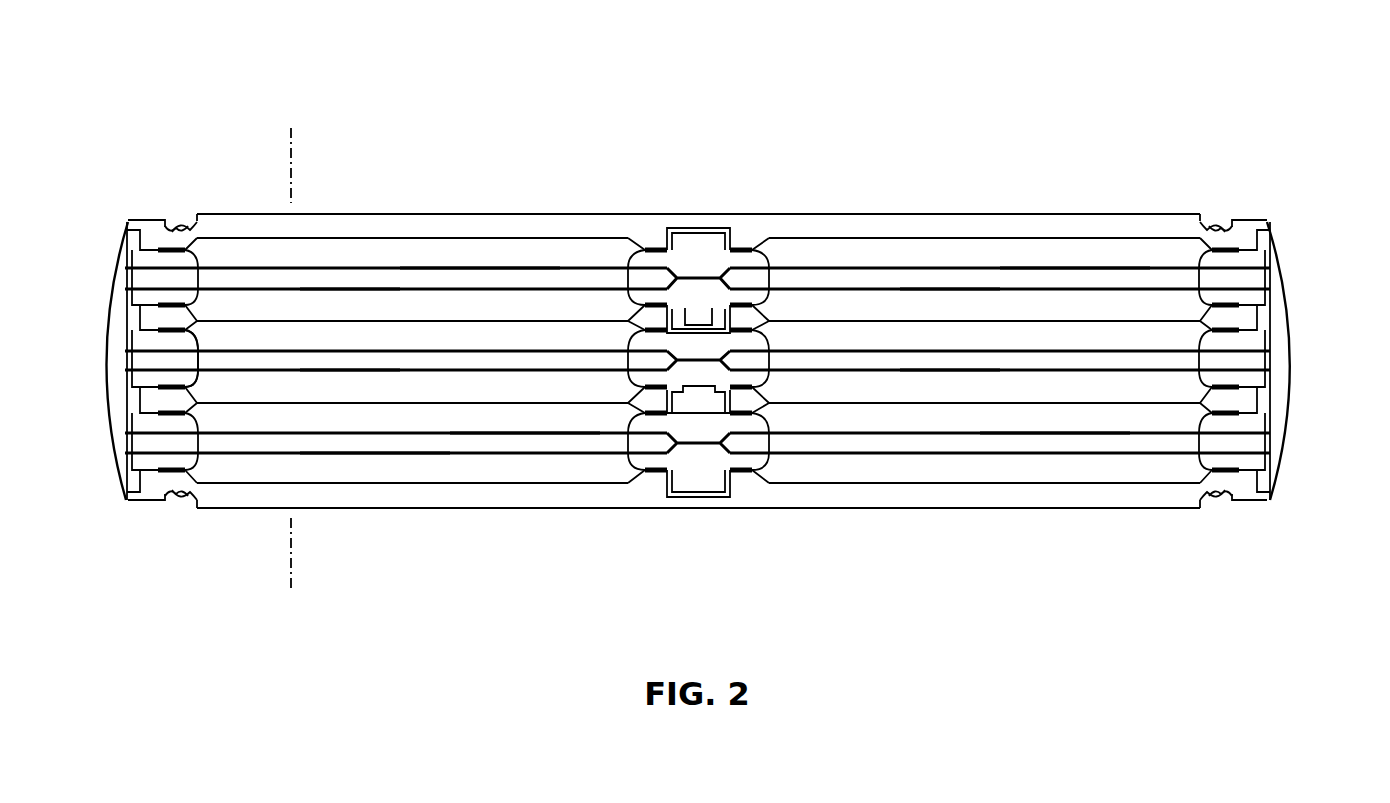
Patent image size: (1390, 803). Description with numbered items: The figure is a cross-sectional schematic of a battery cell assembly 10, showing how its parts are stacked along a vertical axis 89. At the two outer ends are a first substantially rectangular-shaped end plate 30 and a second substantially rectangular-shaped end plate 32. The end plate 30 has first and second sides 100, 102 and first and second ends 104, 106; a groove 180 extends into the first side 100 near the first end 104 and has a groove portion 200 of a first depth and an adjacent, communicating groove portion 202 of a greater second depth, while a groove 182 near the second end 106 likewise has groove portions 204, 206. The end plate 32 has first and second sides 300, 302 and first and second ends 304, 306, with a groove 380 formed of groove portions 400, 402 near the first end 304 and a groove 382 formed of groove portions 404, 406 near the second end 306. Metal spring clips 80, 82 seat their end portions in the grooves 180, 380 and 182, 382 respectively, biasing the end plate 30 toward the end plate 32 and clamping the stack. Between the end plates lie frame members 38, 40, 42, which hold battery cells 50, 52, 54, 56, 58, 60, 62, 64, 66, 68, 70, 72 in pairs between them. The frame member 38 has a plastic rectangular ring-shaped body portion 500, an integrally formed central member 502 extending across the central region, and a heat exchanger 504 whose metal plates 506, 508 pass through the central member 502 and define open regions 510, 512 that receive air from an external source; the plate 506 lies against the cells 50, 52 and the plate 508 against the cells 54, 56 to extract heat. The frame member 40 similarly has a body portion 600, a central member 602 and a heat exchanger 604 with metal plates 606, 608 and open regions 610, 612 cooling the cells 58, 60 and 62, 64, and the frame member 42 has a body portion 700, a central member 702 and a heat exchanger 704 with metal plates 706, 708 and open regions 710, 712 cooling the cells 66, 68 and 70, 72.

The battery cell assembly 10 is at (934, 86).
The first substantially rectangular-shaped end plate 30 is at (943, 208).
The second substantially rectangular-shaped end plate 32 is at (912, 510).
The frame member 38 is at (687, 258).
The frame member 40 is at (736, 246).
The frame member 42 is at (1279, 432).
The battery cell 50 is at (336, 263).
The battery cell 52 is at (948, 263).
The battery cell 54 is at (336, 317).
The battery cell 56 is at (948, 317).
The battery cell 58 is at (336, 348).
The battery cell 60 is at (948, 348).
The battery cell 62 is at (336, 402).
The battery cell 64 is at (948, 402).
The battery cell 66 is at (336, 430).
The battery cell 68 is at (948, 430).
The battery cell 70 is at (336, 483).
The battery cell 72 is at (948, 483).
The metal spring clip 80 is at (110, 368).
The metal spring clip 82 is at (1289, 394).
The vertical axis 89 is at (296, 144).
The first side 100 is at (463, 214).
The second side 102 is at (574, 233).
The first end 104 is at (130, 222).
The second end 106 is at (1276, 224).
The groove 180 is at (190, 221).
The groove 182 is at (1208, 217).
The groove portion 200 is at (163, 218).
The groove portion 202 is at (172, 216).
The groove portion 204 is at (1233, 218).
The groove portion 206 is at (1229, 217).
The first side 300 is at (470, 508).
The second side 302 is at (572, 478).
The first end 304 is at (127, 498).
The second end 306 is at (1276, 494).
The groove 380 is at (190, 503).
The groove 382 is at (1200, 502).
The groove portion 400 is at (167, 502).
The groove portion 402 is at (165, 503).
The groove portion 404 is at (1236, 502).
The groove portion 406 is at (1225, 500).
The rectangular ring-shaped body portion 500 is at (1258, 279).
The central member 502 is at (752, 232).
The heat exchanger 504 is at (620, 240).
The metal plate 506 is at (377, 264).
The metal plate 508 is at (417, 302).
The open region 510 is at (477, 278).
The open region 512 is at (1087, 278).
The rectangular ring-shaped body portion 600 is at (1258, 361).
The central member 602 is at (757, 308).
The heat exchanger 604 is at (547, 348).
The metal plate 606 is at (245, 355).
The metal plate 608 is at (297, 355).
The open region 610 is at (222, 360).
The open region 612 is at (1005, 352).
The rectangular ring-shaped body portion 700 is at (1258, 443).
The central member 702 is at (755, 423).
The heat exchanger 704 is at (613, 455).
The metal plate 706 is at (418, 425).
The metal plate 708 is at (373, 457).
The open region 710 is at (494, 443).
The open region 712 is at (1035, 440).